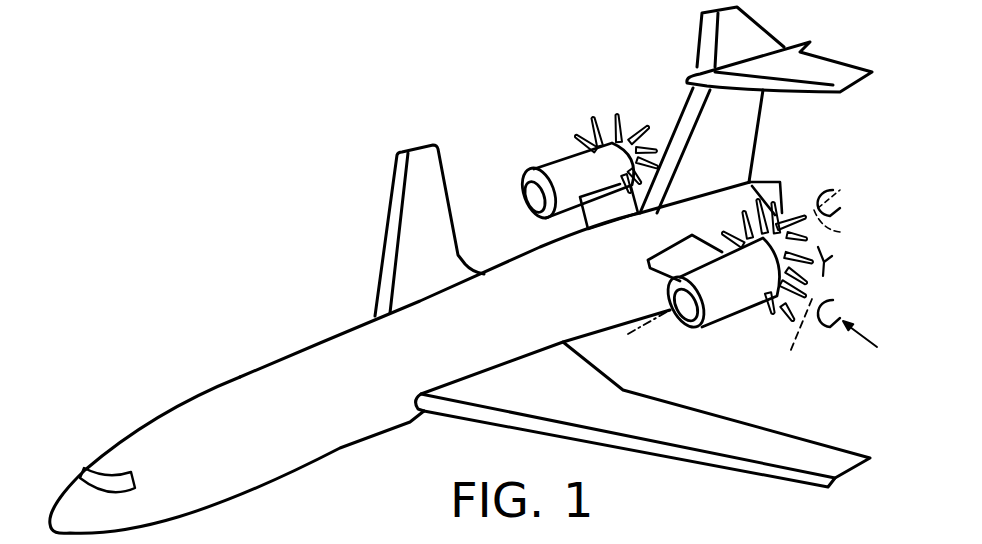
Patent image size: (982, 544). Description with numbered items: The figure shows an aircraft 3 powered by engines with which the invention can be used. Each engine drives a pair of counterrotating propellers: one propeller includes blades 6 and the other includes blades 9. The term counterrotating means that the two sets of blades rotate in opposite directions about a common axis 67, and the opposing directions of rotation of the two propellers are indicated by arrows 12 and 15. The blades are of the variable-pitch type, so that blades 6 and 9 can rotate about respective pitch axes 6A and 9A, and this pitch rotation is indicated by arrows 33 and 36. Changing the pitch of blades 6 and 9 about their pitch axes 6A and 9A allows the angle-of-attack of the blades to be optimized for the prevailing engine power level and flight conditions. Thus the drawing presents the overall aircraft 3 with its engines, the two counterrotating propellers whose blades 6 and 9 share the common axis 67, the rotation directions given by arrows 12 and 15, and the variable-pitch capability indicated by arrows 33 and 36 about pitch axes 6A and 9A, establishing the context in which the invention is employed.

The aircraft 3 is at (386, 378).
The blades 6 is at (767, 312).
The pitch axis 6A is at (795, 357).
The blades 9 is at (780, 185).
The pitch axis 9A is at (842, 226).
The arrow 12 is at (790, 315).
The arrow 15 is at (832, 256).
The arrow 33 is at (833, 296).
The arrow 36 is at (823, 195).
The common axis 67 is at (636, 333).